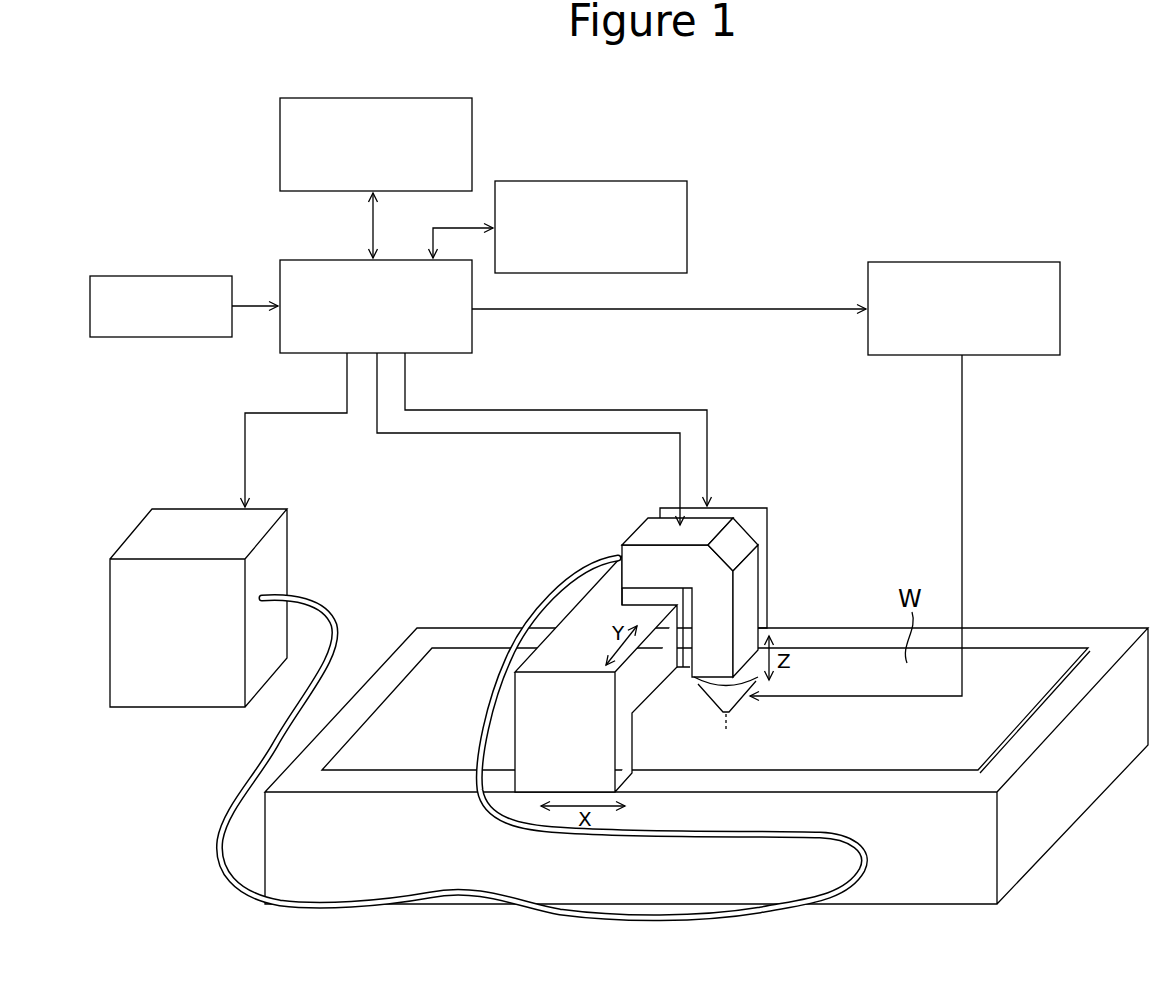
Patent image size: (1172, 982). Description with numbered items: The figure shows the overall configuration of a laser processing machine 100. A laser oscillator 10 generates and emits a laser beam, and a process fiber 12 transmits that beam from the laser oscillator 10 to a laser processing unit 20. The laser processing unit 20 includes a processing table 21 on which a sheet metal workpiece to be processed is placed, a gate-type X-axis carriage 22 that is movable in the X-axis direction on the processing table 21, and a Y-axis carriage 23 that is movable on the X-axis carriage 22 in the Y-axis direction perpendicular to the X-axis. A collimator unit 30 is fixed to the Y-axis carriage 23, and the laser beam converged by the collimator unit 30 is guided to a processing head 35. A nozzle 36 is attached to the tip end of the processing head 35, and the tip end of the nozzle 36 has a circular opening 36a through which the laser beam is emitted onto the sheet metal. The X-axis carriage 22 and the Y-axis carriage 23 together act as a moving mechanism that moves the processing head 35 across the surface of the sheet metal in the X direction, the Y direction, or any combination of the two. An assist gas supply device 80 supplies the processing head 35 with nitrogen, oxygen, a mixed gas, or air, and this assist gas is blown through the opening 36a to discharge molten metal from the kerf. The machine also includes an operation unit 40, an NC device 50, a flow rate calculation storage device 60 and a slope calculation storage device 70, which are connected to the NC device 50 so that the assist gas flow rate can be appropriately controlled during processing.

The laser oscillator 10 is at (212, 506).
The process fiber 12 is at (221, 848).
The laser processing unit 20 is at (852, 627).
The processing table 21 is at (998, 636).
The X-axis carriage 22 is at (768, 535).
The Y-axis carriage 23 is at (672, 670).
The collimator unit 30 is at (630, 533).
The processing head 35 is at (750, 607).
The nozzle 36 is at (754, 702).
The opening 36a is at (737, 722).
The operation unit 40 is at (168, 274).
The NC device 50 is at (322, 258).
The flow rate calculation storage device 60 is at (379, 95).
The slope calculation storage device 70 is at (594, 179).
The assist gas supply device 80 is at (965, 260).
The laser processing machine 100 is at (798, 168).